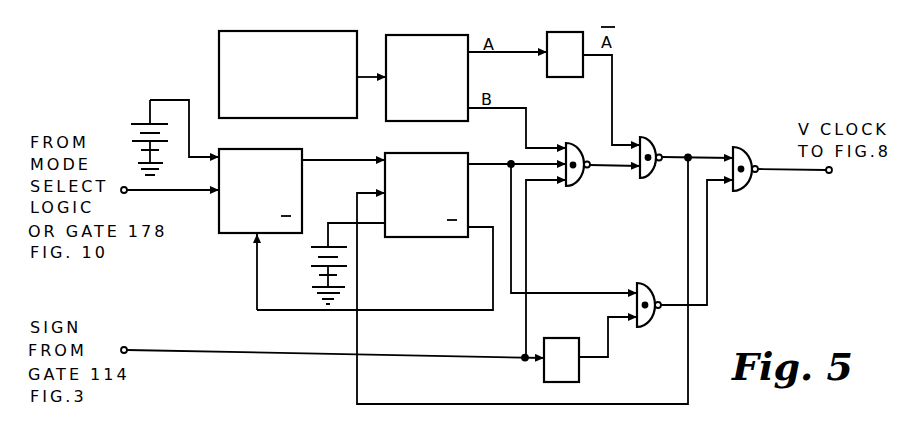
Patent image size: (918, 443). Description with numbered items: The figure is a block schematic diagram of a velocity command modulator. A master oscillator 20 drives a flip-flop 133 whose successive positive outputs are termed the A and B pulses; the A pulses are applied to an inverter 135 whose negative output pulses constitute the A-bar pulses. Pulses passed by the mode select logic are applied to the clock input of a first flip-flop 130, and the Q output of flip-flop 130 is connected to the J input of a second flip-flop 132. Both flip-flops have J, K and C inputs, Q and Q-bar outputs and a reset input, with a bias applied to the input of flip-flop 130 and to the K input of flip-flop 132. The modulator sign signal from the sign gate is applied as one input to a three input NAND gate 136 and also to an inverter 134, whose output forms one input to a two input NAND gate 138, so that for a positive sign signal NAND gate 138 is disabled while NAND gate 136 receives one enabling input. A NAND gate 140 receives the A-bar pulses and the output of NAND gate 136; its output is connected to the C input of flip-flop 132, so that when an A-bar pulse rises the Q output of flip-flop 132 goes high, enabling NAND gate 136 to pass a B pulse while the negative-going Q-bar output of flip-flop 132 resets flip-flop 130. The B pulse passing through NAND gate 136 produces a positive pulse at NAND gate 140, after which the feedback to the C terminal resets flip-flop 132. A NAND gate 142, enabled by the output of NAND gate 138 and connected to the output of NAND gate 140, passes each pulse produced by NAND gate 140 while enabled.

The master oscillator 20 is at (327, 24).
The flip-flop 133 is at (418, 35).
The inverter 135 is at (581, 33).
The three input NAND gate 136 is at (582, 133).
The NAND gate 140 is at (658, 122).
The NAND gate 142 is at (736, 147).
The first flip-flop 130 is at (262, 150).
The second flip-flop 132 is at (418, 154).
The two input NAND gate 138 is at (652, 277).
The inverter 134 is at (549, 338).